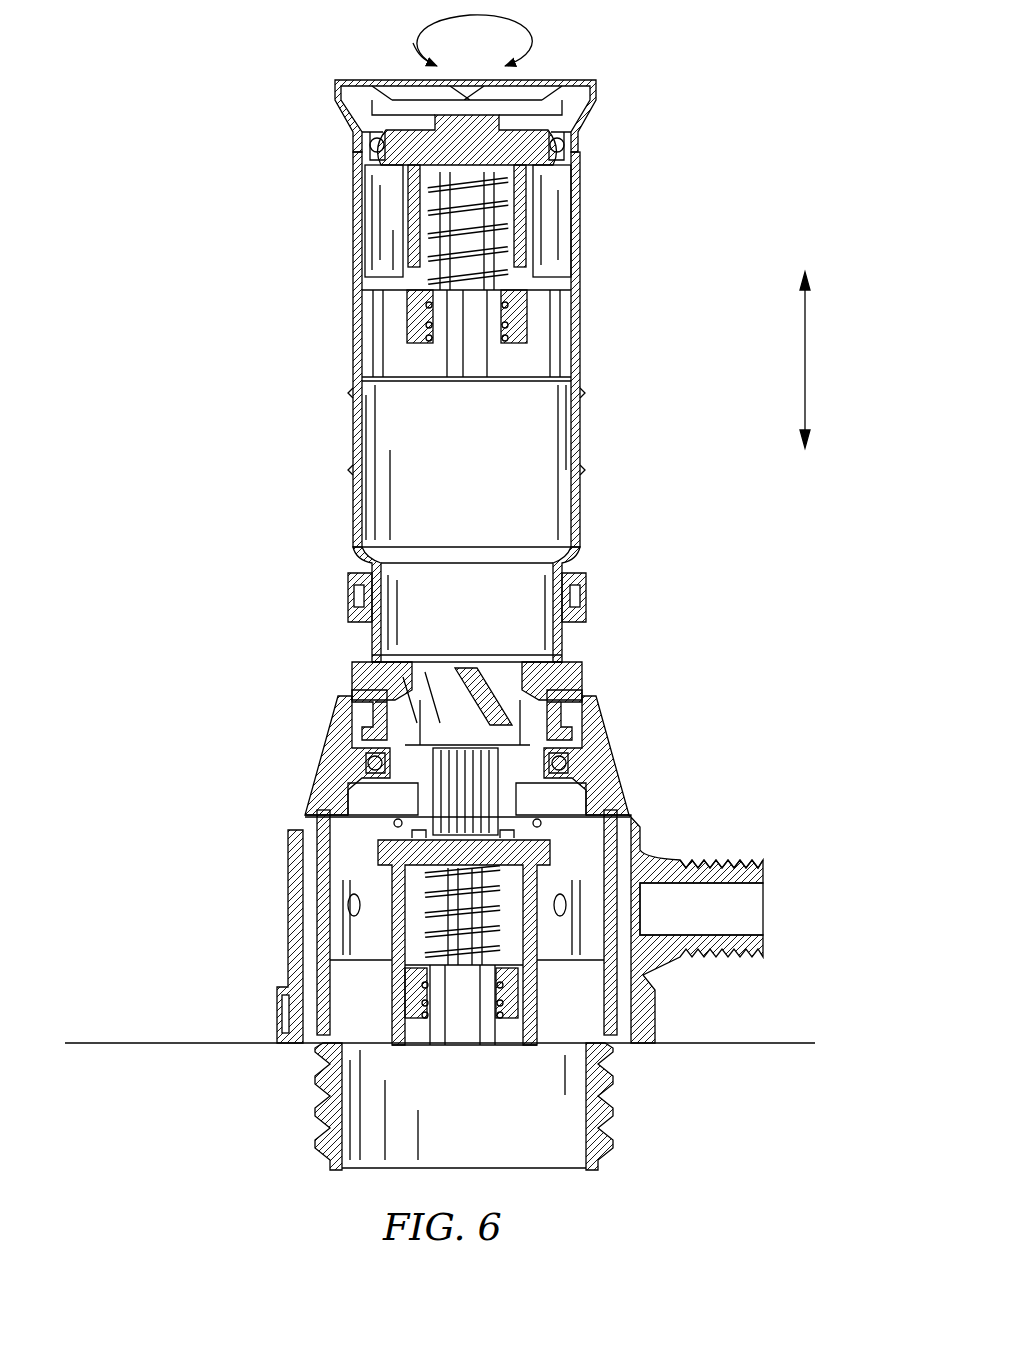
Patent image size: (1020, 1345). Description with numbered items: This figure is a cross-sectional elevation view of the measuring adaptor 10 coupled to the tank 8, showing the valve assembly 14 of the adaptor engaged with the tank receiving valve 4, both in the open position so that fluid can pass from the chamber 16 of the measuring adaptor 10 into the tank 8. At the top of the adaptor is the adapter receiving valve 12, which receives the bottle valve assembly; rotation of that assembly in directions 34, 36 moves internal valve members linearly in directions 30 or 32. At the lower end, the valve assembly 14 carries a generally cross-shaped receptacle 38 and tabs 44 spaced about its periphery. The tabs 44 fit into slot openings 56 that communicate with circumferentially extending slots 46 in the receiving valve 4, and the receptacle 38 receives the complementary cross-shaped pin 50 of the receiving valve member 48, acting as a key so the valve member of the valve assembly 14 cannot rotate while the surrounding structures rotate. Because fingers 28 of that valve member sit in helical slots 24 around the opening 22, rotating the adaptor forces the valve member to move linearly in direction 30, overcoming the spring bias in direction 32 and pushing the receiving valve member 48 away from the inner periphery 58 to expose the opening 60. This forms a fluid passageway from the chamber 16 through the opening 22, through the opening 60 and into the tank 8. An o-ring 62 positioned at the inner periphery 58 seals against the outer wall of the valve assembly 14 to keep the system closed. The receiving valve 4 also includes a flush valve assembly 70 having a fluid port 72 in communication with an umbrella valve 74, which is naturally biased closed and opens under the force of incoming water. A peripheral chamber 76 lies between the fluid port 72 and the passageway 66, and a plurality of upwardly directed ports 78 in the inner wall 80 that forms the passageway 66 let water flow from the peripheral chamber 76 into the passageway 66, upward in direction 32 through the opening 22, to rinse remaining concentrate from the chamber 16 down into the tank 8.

The tank receiving valve 4 is at (208, 995).
The tank 8 is at (780, 1038).
The measuring adaptor 10 is at (622, 330).
The adapter receiving valve 12 is at (597, 118).
The valve assembly 14 is at (600, 590).
The chamber 16 is at (548, 447).
The opening 22 is at (453, 660).
The helical slots 24 is at (462, 700).
The fingers 28 is at (388, 690).
The direction 30 is at (808, 436).
The direction 32 is at (808, 292).
The direction 34 is at (515, 36).
The direction 36 is at (425, 37).
The receptacle 38 is at (478, 777).
The tabs 44 is at (365, 745).
The slots 46 is at (368, 762).
The receiving valve member 48 is at (403, 852).
The pin 50 is at (520, 830).
The slot openings 56 is at (355, 735).
The inner periphery 58 is at (590, 770).
The opening 60 is at (385, 797).
The o-ring 62 is at (345, 790).
The passageway 66 is at (645, 975).
The flush valve assembly 70 is at (748, 822).
The fluid port 72 is at (765, 906).
The umbrella valve 74 is at (650, 858).
The peripheral chamber 76 is at (628, 1023).
The ports 78 is at (325, 925).
The inner wall 80 is at (357, 882).